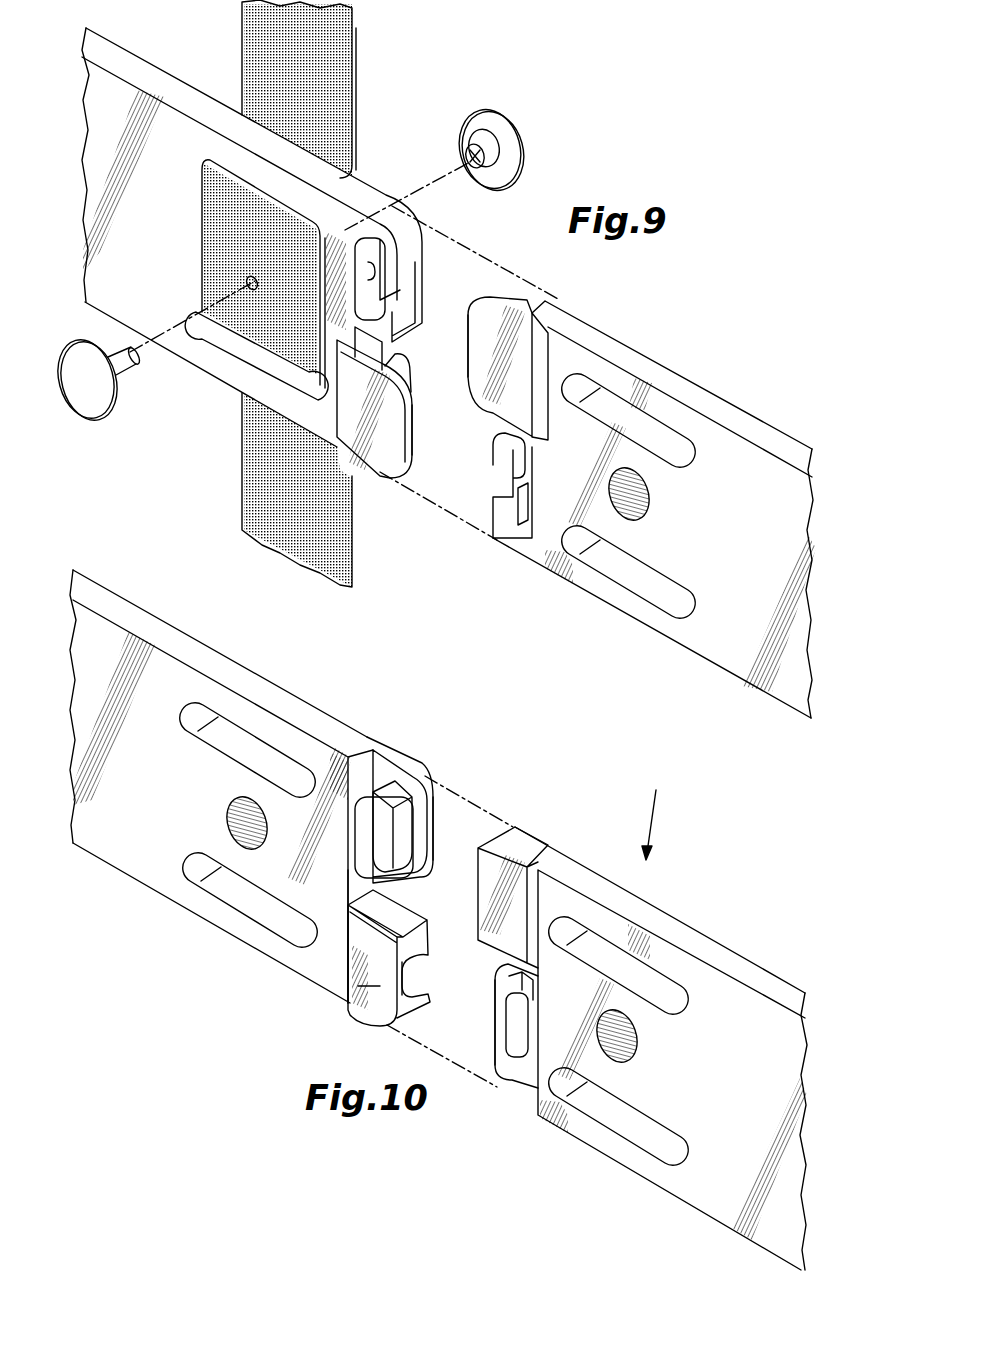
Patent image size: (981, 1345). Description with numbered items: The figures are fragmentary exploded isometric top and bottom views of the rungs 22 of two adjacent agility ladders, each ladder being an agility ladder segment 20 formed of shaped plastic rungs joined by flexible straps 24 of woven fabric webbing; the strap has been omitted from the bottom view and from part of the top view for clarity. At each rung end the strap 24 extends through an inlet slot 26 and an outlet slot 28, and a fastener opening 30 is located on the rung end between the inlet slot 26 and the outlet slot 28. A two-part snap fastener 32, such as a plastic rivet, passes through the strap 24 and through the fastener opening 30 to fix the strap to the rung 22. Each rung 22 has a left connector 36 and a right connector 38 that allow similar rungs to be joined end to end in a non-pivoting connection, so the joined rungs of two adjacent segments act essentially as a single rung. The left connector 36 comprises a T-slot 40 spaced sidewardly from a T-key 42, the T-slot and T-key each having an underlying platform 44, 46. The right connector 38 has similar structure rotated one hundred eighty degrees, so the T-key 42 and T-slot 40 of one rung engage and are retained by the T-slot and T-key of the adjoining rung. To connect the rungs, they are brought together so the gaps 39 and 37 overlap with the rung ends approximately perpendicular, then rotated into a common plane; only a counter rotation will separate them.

In FIG. 10, the agility ladder segment 20 is at (655, 809).
In FIG. 9, the rung 22 is at (661, 366).
In FIG. 10, the rung 22 is at (137, 620).
In FIG. 9, the strap 24 is at (356, 88).
In FIG. 9, the inlet slot 26 is at (204, 170).
In FIG. 9, the outlet slot 28 is at (217, 343).
In FIG. 9, the fastener opening 30 is at (646, 520).
In FIG. 10, the fastener opening 30 is at (262, 847).
In FIG. 9, the snap fastener 32 is at (83, 400).
In FIG. 9, the left connector 36 is at (520, 307).
In FIG. 10, the gap 37 is at (535, 963).
In FIG. 9, the right connector 38 is at (383, 463).
In FIG. 10, the right connector 38 is at (402, 750).
In FIG. 10, the gap 39 is at (357, 873).
In FIG. 9, the T-slot 40 is at (365, 280).
In FIG. 10, the T-slot 40 is at (410, 960).
In FIG. 9, the T-key 42 is at (407, 365).
In FIG. 10, the T-key 42 is at (405, 853).
In FIG. 9, the platform 44 is at (420, 274).
In FIG. 10, the platform 44 is at (478, 893).
In FIG. 9, the platform 46 is at (482, 329).
In FIG. 10, the platform 46 is at (437, 800).